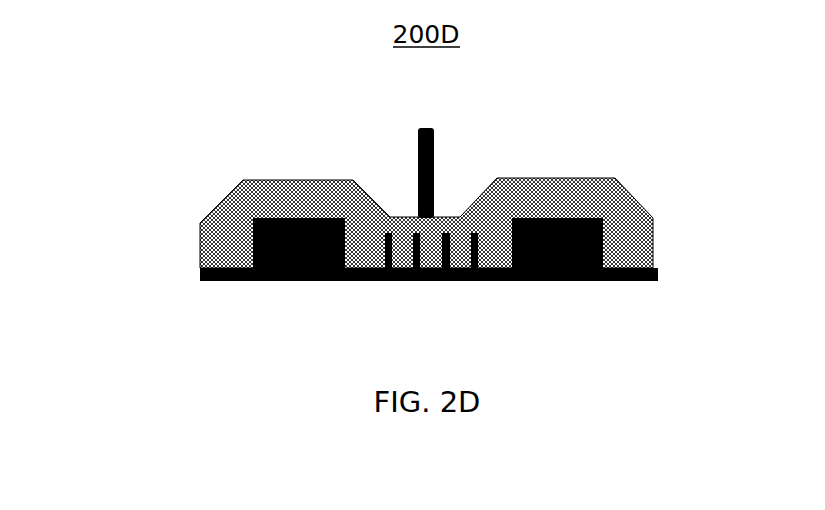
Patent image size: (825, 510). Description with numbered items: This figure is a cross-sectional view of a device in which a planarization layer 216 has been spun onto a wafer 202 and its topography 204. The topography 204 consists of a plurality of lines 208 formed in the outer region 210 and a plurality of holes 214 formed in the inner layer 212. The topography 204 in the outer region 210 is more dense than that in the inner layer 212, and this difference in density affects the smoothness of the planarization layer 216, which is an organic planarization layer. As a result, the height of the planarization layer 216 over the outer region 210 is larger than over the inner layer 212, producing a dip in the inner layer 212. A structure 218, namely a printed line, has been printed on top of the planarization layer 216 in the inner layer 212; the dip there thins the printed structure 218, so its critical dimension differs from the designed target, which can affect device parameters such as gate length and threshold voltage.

The wafer 202 is at (200, 278).
The topography 204 is at (655, 220).
The lines 208 is at (272, 217).
The outer region 210 is at (198, 147).
The inner layer 212 is at (498, 305).
The holes 214 is at (450, 232).
The planarization layer 216 is at (608, 200).
The structure 218 is at (420, 128).